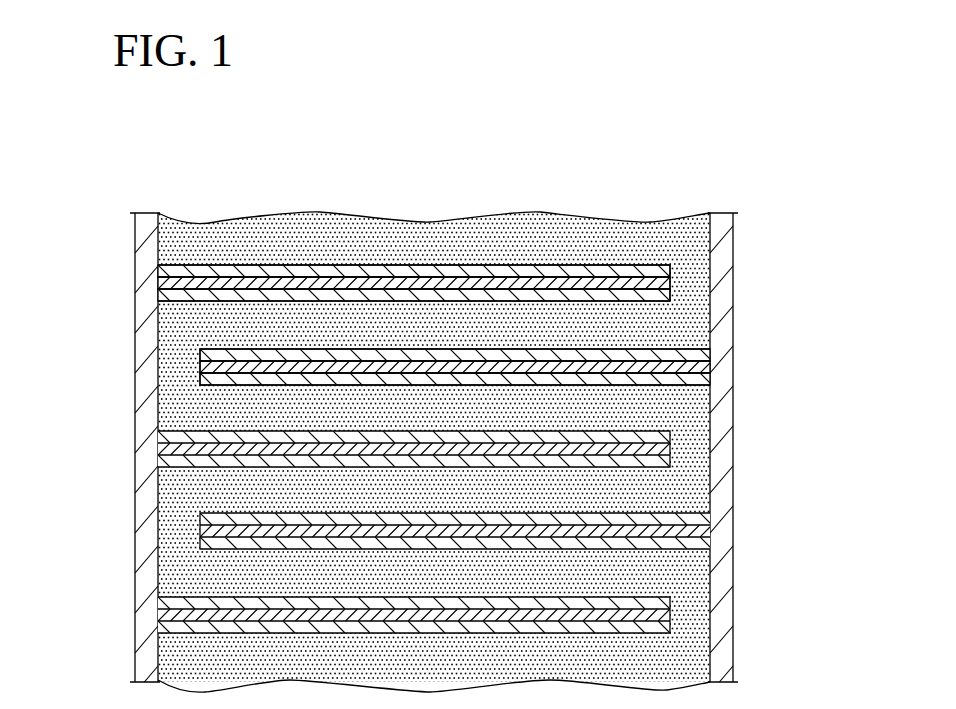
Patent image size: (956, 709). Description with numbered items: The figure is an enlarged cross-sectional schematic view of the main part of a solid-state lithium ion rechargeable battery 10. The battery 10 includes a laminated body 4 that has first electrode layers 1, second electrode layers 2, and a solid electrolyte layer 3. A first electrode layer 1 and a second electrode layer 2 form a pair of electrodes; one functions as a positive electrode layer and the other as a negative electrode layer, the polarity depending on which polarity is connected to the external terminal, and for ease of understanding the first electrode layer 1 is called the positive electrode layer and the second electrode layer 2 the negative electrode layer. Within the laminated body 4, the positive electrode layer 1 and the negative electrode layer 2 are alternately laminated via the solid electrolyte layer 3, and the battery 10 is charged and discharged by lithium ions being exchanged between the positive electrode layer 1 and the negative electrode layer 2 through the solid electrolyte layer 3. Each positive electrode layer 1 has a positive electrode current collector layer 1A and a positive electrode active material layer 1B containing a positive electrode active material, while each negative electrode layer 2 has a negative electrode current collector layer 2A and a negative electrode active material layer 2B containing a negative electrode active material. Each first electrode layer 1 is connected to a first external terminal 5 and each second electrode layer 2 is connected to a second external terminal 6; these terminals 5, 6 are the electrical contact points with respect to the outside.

The solid-state lithium ion rechargeable battery 10 is at (777, 190).
The first electrode layer 1 is at (40, 232).
The positive electrode current collector layer 1A is at (165, 284).
The positive electrode active material layer 1B is at (168, 270).
The second electrode layer 2 is at (835, 310).
The negative electrode current collector layer 2A is at (705, 367).
The negative electrode active material layer 2B is at (705, 351).
The solid electrolyte layer 3 is at (680, 410).
The laminated body 4 is at (708, 306).
The first external terminal 5 is at (148, 375).
The second external terminal 6 is at (722, 625).